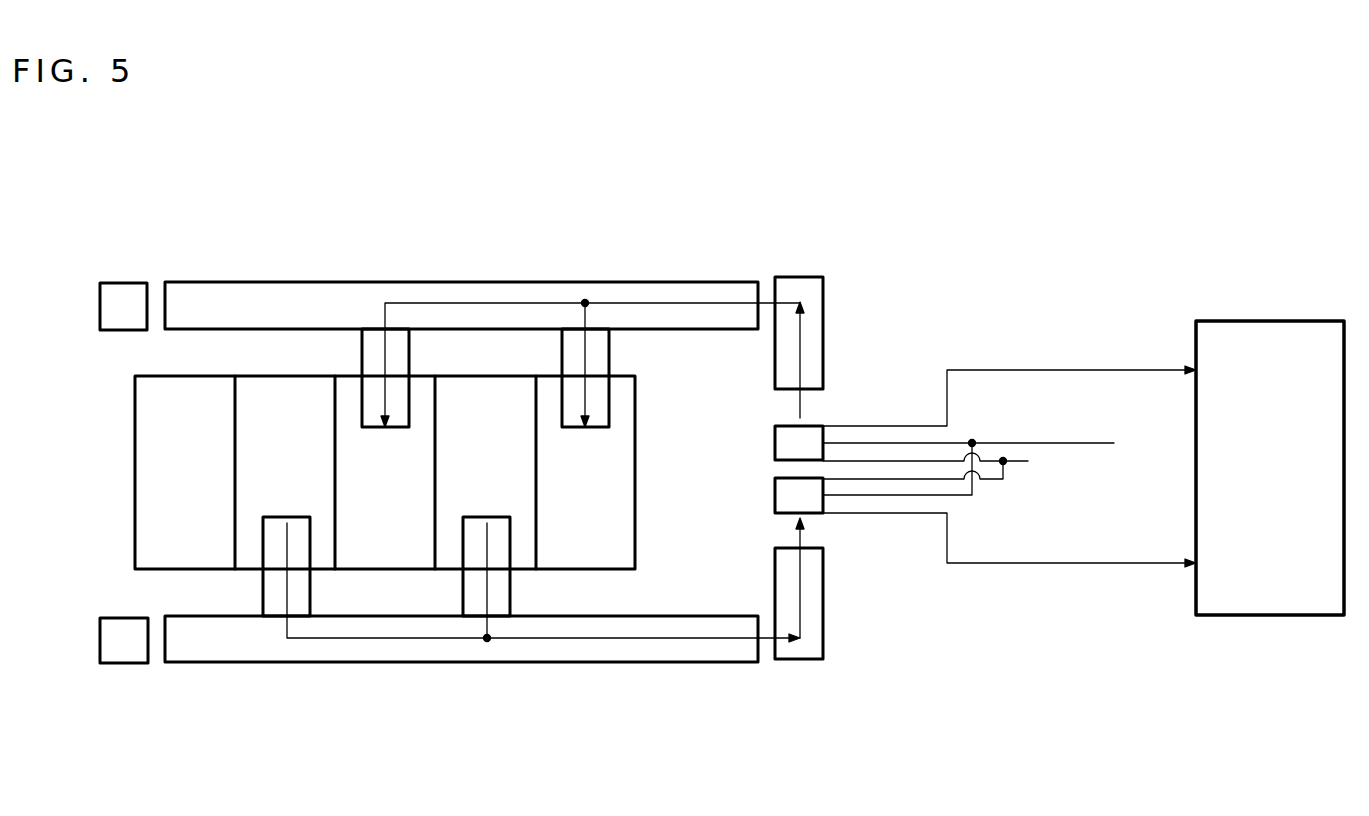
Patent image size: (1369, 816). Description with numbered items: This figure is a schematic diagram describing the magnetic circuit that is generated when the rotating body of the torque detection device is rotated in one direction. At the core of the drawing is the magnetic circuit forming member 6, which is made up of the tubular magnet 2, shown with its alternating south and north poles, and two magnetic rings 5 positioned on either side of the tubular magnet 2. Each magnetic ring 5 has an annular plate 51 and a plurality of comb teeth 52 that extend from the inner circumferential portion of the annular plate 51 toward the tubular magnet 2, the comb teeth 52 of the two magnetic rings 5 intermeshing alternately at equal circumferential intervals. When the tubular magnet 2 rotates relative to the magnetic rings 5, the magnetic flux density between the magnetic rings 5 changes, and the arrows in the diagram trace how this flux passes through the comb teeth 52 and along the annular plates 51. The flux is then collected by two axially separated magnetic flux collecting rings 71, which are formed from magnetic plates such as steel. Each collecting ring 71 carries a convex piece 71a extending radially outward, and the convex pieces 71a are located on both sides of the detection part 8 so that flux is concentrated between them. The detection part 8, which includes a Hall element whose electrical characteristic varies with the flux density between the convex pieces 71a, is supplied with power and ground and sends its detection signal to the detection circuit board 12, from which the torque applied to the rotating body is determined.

The tubular magnet 2 is at (138, 442).
The magnetic ring 5 is at (341, 280).
The magnetic circuit forming member 6 is at (247, 238).
The detection part 8 is at (812, 425).
The detection circuit board 12 is at (1257, 321).
The annular plate 51 is at (593, 282).
The comb tooth 52 is at (362, 350).
The magnetic flux collecting ring 71 is at (122, 282).
The convex piece 71a is at (823, 313).